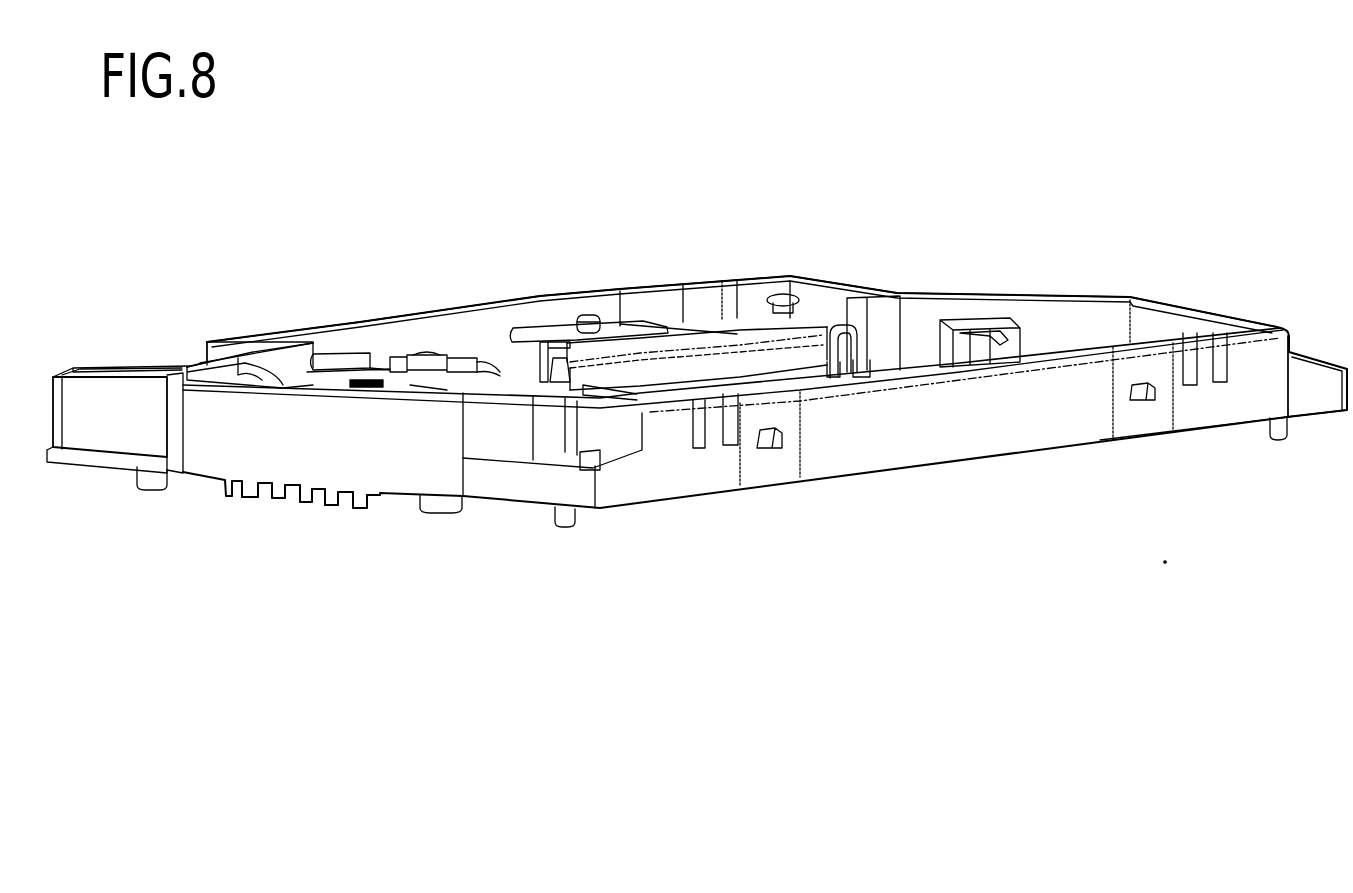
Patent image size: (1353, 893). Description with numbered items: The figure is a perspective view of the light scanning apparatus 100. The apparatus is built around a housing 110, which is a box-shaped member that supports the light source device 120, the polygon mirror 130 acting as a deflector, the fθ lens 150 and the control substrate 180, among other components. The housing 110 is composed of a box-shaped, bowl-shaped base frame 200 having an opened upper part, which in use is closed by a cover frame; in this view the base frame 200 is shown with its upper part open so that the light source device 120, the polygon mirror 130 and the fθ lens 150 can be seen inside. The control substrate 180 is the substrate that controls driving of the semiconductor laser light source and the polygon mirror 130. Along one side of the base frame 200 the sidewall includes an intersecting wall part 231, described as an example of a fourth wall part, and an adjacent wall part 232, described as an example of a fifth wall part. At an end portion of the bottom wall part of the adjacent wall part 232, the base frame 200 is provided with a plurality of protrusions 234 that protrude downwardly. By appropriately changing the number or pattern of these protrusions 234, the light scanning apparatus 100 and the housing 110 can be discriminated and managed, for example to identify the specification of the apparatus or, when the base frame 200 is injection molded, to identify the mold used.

The light scanning apparatus 100 is at (1010, 243).
The base frame 200 is at (1165, 302).
The housing 110 is at (1194, 388).
The control substrate 180 is at (131, 370).
The adjacent wall part 232 is at (303, 430).
The intersecting wall part 231 is at (252, 355).
The light source device 120 is at (340, 363).
The polygon mirror 130 is at (558, 323).
The fθ lens 150 is at (715, 340).
The protrusions 234 is at (226, 497).